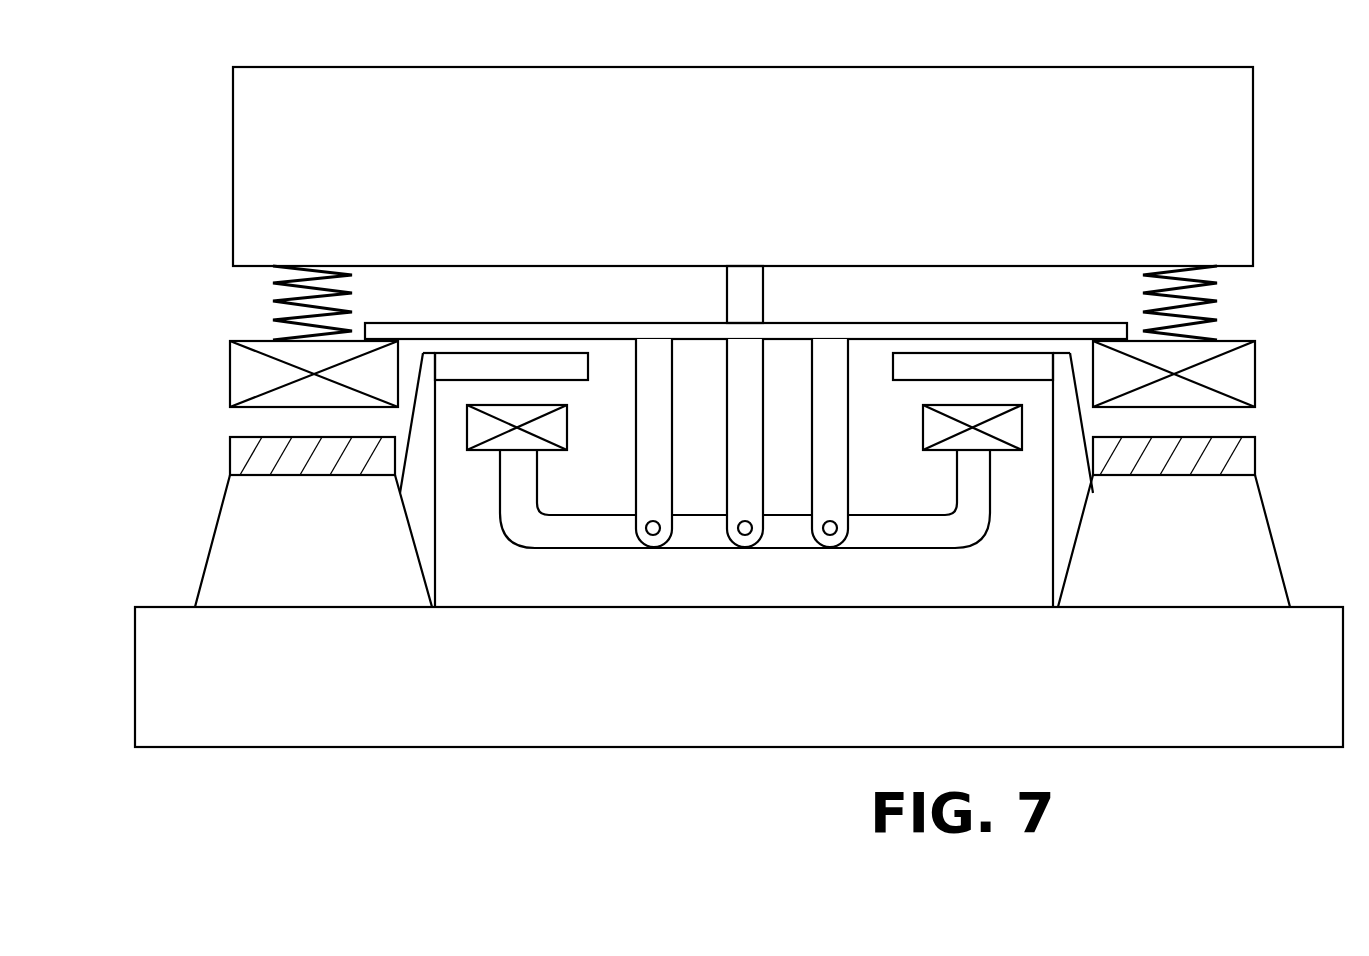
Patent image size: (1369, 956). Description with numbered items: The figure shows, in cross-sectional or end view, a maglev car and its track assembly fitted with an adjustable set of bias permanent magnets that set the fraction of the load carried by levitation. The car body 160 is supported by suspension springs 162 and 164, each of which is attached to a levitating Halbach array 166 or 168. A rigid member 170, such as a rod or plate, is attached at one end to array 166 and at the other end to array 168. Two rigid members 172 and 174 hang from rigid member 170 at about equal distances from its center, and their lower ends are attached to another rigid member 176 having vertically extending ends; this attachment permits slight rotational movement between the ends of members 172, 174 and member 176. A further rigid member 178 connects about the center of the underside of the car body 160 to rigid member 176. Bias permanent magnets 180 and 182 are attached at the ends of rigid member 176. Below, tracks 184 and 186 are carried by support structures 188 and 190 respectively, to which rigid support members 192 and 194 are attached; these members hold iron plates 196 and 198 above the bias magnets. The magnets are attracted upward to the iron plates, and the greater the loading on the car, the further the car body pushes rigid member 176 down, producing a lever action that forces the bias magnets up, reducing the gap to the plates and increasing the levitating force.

The car body 160 is at (730, 157).
The suspension spring 162 is at (273, 298).
The suspension spring 164 is at (1218, 310).
The levitating Halbach array 166 is at (230, 380).
The levitating Halbach array 168 is at (1257, 376).
The rigid member 170 is at (1025, 323).
The rigid member 172 is at (672, 365).
The rigid member 174 is at (813, 372).
The rigid member 176 is at (610, 548).
The rigid member 178 is at (766, 302).
The bias permanent magnet 180 is at (567, 435).
The bias permanent magnet 182 is at (922, 452).
The track 184 is at (230, 456).
The track 186 is at (1255, 456).
The support structure 188 is at (353, 562).
The support structure 190 is at (1217, 557).
The rigid support member 192 is at (437, 518).
The rigid support member 194 is at (1053, 486).
The iron plate 196 is at (520, 353).
The iron plate 198 is at (931, 353).